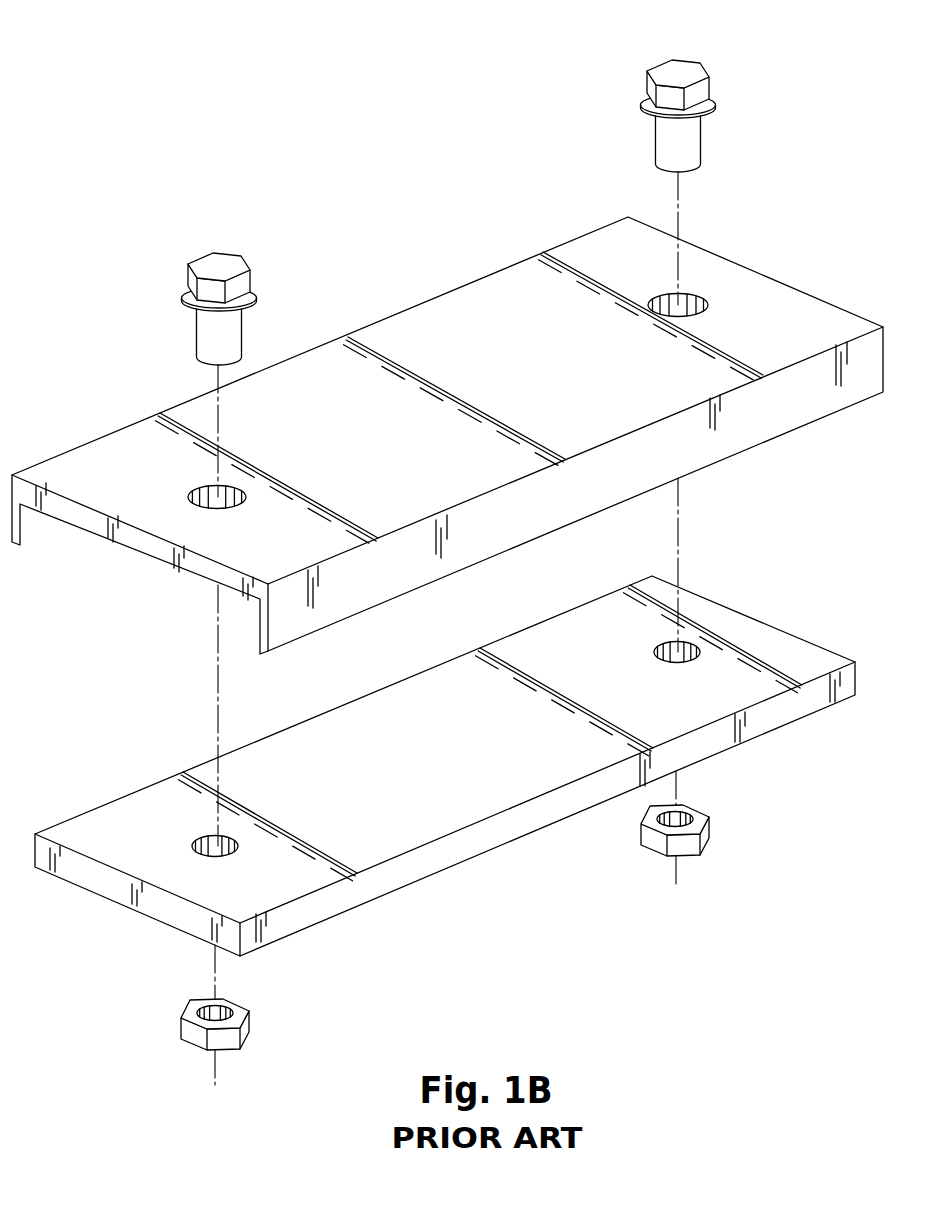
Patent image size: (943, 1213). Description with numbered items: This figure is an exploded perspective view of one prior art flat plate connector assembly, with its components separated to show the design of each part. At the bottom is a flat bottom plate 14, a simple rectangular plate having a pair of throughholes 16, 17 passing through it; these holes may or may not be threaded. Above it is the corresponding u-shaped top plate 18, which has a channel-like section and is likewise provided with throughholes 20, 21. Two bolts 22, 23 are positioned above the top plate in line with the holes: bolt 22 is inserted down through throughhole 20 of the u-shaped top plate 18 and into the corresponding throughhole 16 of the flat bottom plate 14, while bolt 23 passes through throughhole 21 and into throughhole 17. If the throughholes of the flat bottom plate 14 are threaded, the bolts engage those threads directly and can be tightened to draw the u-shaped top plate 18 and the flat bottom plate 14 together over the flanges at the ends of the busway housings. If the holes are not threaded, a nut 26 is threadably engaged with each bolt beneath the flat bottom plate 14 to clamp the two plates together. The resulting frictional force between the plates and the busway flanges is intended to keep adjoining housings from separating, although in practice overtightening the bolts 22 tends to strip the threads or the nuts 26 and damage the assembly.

The flat bottom plate 14 is at (108, 888).
The throughhole 16 is at (202, 837).
The throughhole 17 is at (680, 643).
The u-shaped top plate 18 is at (443, 293).
The throughhole 20 is at (213, 488).
The throughhole 21 is at (682, 293).
The bolt 22 is at (225, 262).
The bolt 23 is at (665, 68).
The nut 26 is at (250, 1029).